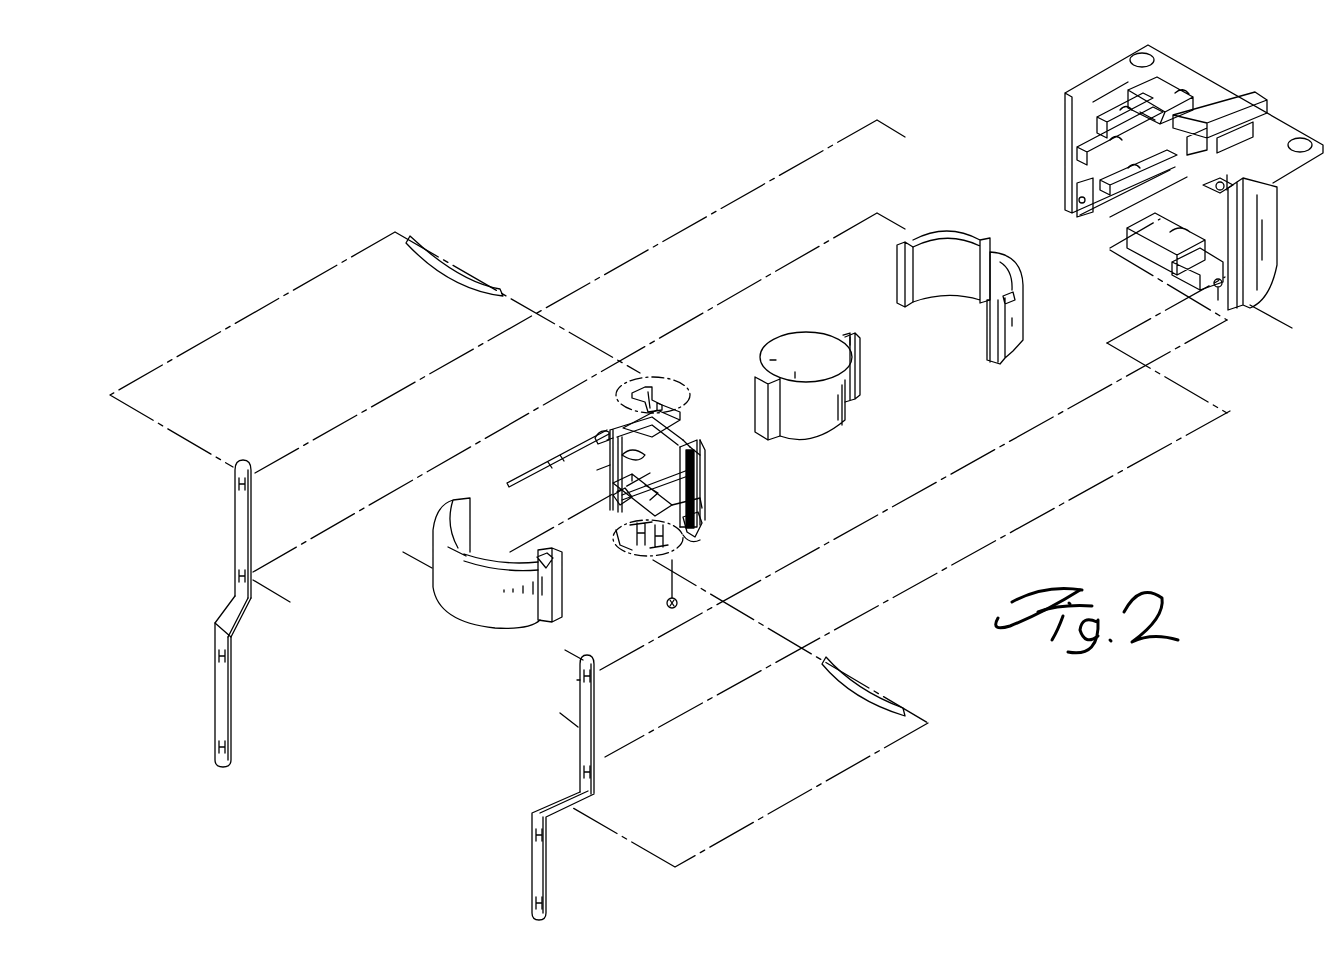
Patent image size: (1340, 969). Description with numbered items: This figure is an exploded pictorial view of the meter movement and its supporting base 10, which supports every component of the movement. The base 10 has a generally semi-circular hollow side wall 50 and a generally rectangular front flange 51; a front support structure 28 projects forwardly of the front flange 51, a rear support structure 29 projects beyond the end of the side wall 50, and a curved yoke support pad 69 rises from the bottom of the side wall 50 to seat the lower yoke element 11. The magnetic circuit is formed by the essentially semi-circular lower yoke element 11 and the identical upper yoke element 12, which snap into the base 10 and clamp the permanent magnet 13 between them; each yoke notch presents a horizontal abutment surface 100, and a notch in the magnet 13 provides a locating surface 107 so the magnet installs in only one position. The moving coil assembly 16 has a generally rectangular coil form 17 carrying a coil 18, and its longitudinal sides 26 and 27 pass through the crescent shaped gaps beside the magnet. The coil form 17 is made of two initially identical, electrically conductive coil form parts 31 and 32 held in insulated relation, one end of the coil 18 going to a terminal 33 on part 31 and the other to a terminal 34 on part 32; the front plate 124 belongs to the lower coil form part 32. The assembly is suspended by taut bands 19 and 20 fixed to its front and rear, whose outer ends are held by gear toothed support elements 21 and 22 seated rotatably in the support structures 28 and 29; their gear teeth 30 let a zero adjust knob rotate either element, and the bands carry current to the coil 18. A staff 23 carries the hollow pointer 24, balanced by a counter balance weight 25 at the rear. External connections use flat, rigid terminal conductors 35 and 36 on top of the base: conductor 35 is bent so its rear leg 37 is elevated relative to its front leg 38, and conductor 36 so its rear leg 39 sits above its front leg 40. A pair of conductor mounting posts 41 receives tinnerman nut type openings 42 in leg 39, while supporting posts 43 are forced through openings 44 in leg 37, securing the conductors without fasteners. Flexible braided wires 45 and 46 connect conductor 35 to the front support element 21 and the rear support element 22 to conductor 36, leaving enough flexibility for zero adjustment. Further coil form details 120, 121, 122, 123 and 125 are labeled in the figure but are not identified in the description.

The supporting base 10 is at (1166, 200).
The lower yoke element 11 is at (1040, 303).
The upper yoke element 12 is at (470, 613).
The permanent magnet 13 is at (851, 439).
The moving coil assembly 16 is at (713, 537).
The coil form 17 is at (698, 498).
The coil 18 is at (696, 483).
The taut band 19 is at (650, 395).
The taut band 20 is at (633, 539).
The front support element 21 is at (627, 396).
The rear support element 22 is at (642, 560).
The staff 23 is at (595, 438).
The pointer 24 is at (520, 478).
The counter balance weight 25 is at (666, 604).
The longitudinal side 26 is at (680, 485).
The longitudinal side 27 is at (615, 494).
The front support structure 28 is at (1133, 98).
The rear support structure 29 is at (1145, 255).
The gear teeth 30 is at (636, 560).
The coil form part 31 is at (696, 455).
The coil form part 32 is at (703, 460).
The terminal 33 is at (690, 432).
The terminal 34 is at (692, 540).
The terminal conductor 35 is at (563, 787).
The terminal conductor 36 is at (255, 613).
The rear leg 37 is at (547, 856).
The front leg 38 is at (597, 702).
The rear leg 39 is at (233, 706).
The front leg 40 is at (255, 508).
The conductor mounting post 41 is at (1078, 198).
The tinnerman nut type opening 42 is at (240, 574).
The supporting post 43 is at (1215, 300).
The opening 44 is at (577, 678).
The flexible braided wire conductor 45 is at (456, 272).
The braided wire 46 is at (870, 690).
The side wall 50 is at (1262, 282).
The front flange 51 is at (1283, 128).
The yoke support pad 69 is at (1240, 156).
The abutment surface 100 is at (1026, 338).
The locating surface 107 is at (848, 335).
The post 120 is at (597, 470).
The plate 121 is at (633, 509).
The edge 122 is at (702, 516).
The tab 123 is at (624, 444).
The front plate 124 is at (668, 428).
The post 125 is at (607, 440).